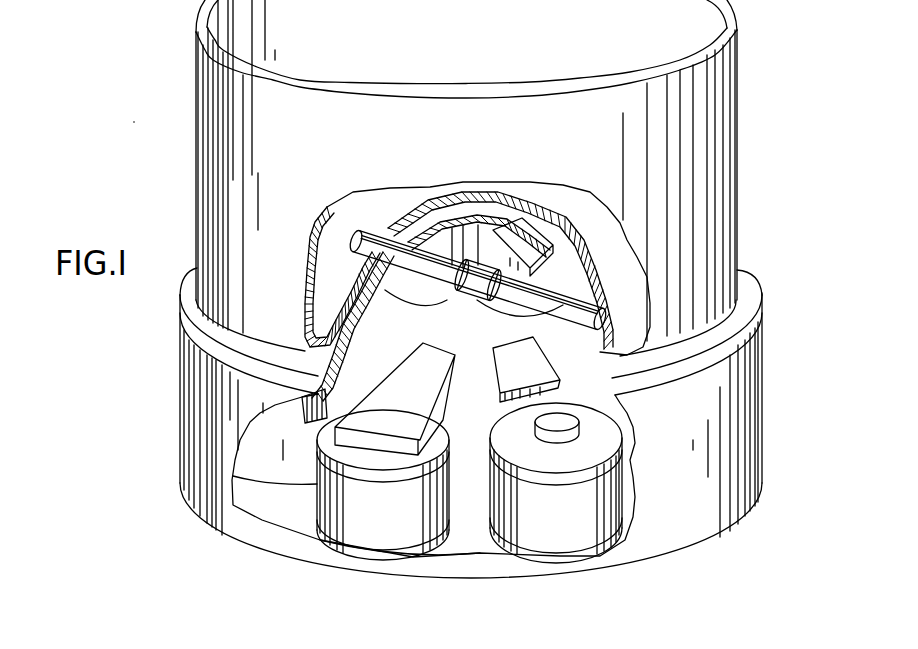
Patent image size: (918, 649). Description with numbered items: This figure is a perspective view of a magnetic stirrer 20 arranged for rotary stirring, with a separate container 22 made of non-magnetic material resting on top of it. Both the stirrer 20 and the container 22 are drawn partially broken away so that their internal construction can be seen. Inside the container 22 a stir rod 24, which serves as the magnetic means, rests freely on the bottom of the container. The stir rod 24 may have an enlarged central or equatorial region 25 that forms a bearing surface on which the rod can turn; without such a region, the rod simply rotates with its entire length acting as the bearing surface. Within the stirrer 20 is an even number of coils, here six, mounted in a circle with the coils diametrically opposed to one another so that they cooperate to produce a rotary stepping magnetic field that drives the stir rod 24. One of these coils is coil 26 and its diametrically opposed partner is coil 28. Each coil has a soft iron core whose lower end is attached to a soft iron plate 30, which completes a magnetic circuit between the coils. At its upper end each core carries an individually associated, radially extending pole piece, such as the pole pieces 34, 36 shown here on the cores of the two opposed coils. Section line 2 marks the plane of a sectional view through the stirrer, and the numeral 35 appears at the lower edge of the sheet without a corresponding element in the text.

The section line 2 is at (600, 62).
The stirrer 20 is at (781, 420).
The container 22 is at (748, 118).
The stir rod 24 is at (377, 235).
The enlarged central region 25 is at (487, 215).
The coil 26 is at (371, 526).
The diametrically opposed coil 28 is at (494, 304).
The soft iron plate 30 is at (473, 535).
The pole piece 34 is at (386, 414).
The floor 35 is at (429, 594).
The pole piece 36 is at (517, 235).